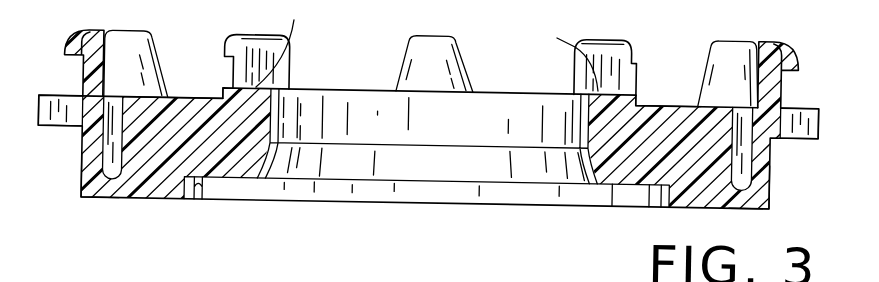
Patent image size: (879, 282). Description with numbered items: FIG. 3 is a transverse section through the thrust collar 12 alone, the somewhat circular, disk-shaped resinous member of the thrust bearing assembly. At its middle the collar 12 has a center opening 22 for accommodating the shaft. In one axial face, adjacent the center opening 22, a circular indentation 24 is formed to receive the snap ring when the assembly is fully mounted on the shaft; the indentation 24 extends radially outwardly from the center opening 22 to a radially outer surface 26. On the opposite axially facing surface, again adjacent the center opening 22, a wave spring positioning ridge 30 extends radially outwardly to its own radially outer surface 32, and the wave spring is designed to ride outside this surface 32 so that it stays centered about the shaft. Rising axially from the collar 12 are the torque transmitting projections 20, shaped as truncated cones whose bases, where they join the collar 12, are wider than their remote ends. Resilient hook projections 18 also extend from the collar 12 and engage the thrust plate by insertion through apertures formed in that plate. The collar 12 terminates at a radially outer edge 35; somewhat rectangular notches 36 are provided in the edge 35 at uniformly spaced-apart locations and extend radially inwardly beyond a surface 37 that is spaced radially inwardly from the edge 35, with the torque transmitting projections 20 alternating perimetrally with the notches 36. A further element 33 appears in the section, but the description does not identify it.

The thrust collar 12 is at (364, 63).
The resilient hook projections 18 is at (78, 34).
The torque transmitting projections 20 is at (133, 37).
The center opening 22 is at (448, 198).
The circular indentation 24 is at (614, 200).
The radially outer surface 26 is at (210, 198).
The wave spring positioning ridge 30 is at (427, 46).
The radially outer surface 32 is at (219, 94).
The top surface 33 is at (189, 101).
The radially outer edge 35 is at (36, 121).
The notches 36 is at (384, 274).
The surface 37 is at (80, 173).